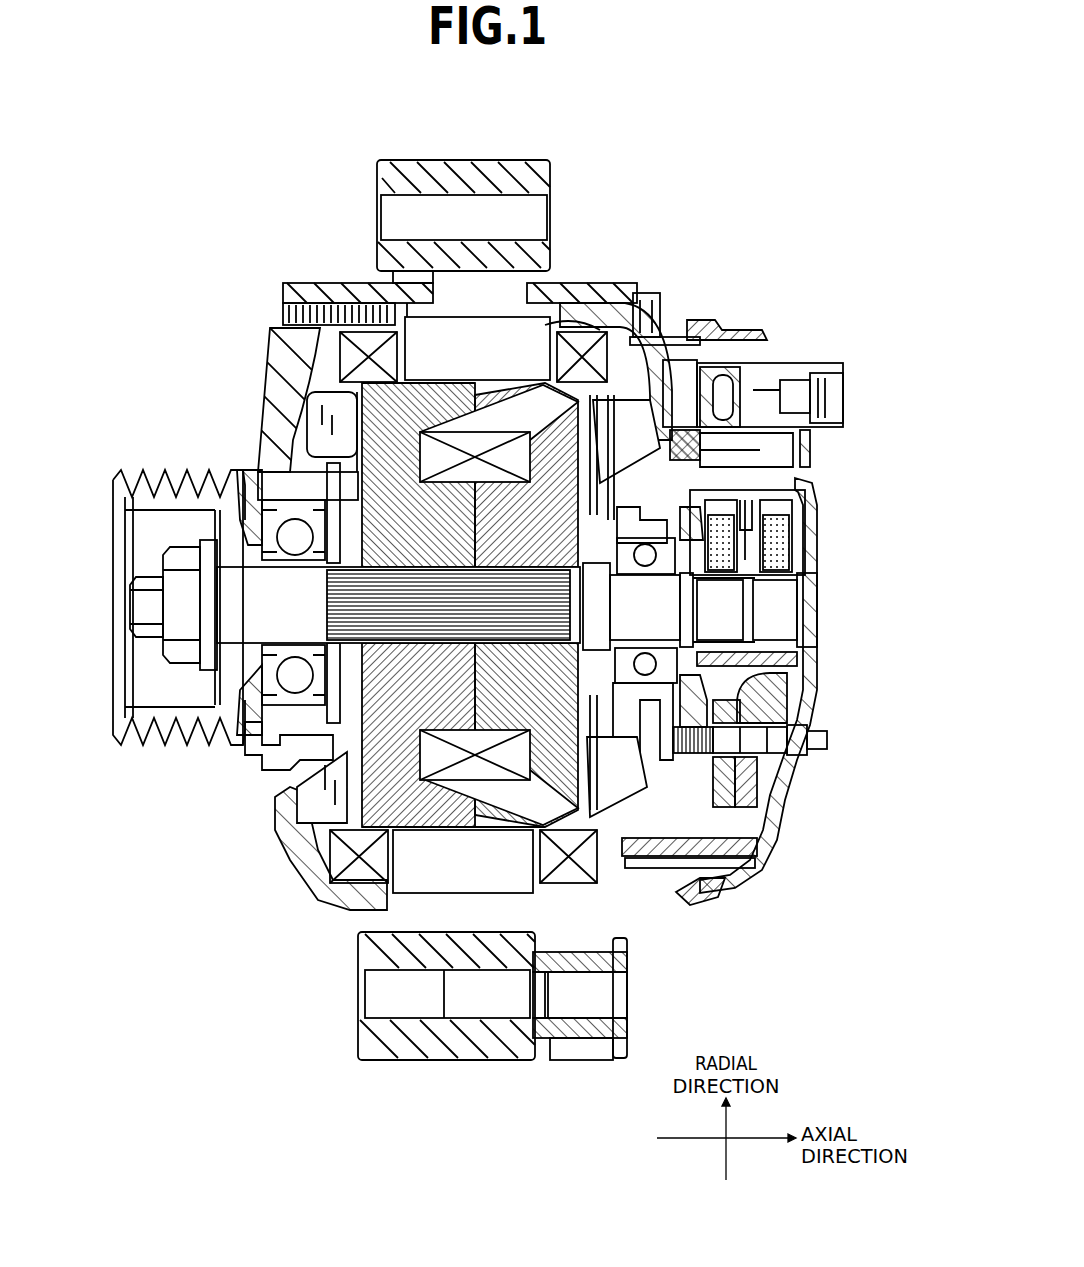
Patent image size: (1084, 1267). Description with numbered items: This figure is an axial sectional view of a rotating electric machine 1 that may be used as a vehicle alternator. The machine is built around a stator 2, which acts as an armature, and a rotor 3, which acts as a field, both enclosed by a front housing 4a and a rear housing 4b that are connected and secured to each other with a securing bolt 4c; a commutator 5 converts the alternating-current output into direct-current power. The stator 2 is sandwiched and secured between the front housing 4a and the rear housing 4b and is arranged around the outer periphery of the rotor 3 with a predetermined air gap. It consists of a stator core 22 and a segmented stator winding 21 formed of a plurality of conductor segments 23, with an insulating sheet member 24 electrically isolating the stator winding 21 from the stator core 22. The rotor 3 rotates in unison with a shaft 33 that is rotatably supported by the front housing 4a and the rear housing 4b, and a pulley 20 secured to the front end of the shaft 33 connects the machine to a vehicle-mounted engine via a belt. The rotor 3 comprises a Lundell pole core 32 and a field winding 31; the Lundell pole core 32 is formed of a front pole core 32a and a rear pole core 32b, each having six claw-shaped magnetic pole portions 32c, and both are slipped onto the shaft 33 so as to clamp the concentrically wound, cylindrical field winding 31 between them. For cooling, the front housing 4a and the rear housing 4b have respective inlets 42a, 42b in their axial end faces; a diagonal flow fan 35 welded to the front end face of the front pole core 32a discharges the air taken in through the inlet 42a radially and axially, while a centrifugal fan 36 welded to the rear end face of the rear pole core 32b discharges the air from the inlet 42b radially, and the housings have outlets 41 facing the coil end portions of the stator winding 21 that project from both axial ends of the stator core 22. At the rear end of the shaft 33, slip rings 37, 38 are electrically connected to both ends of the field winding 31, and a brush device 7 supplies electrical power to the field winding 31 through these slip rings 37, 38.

The rotating electric machine 1 is at (592, 160).
The stator 2 is at (466, 300).
The rotor 3 is at (613, 880).
The front housing 4a is at (308, 290).
The rear housing 4b is at (620, 283).
The securing bolt 4c is at (650, 293).
The commutator 5 is at (790, 805).
The brush device 7 is at (795, 548).
The pulley 20 is at (183, 485).
The stator winding 21 is at (340, 303).
The stator core 22 is at (367, 340).
The conductor segments 23 is at (580, 328).
The insulating sheet member 24 is at (553, 337).
The field winding 31 is at (383, 905).
The Lundell pole core 32 is at (470, 820).
The front pole core 32a is at (378, 807).
The rear pole core 32b is at (623, 867).
The claw-shaped magnetic pole portions 32c is at (590, 983).
The shaft 33 is at (243, 580).
The diagonal flow fan 35 is at (312, 805).
The centrifugal fan 36 is at (713, 890).
The slip ring 37 is at (730, 593).
The slip ring 38 is at (778, 625).
The outlets 41 is at (315, 897).
The inlet 42a is at (275, 775).
The inlet 42b is at (690, 477).